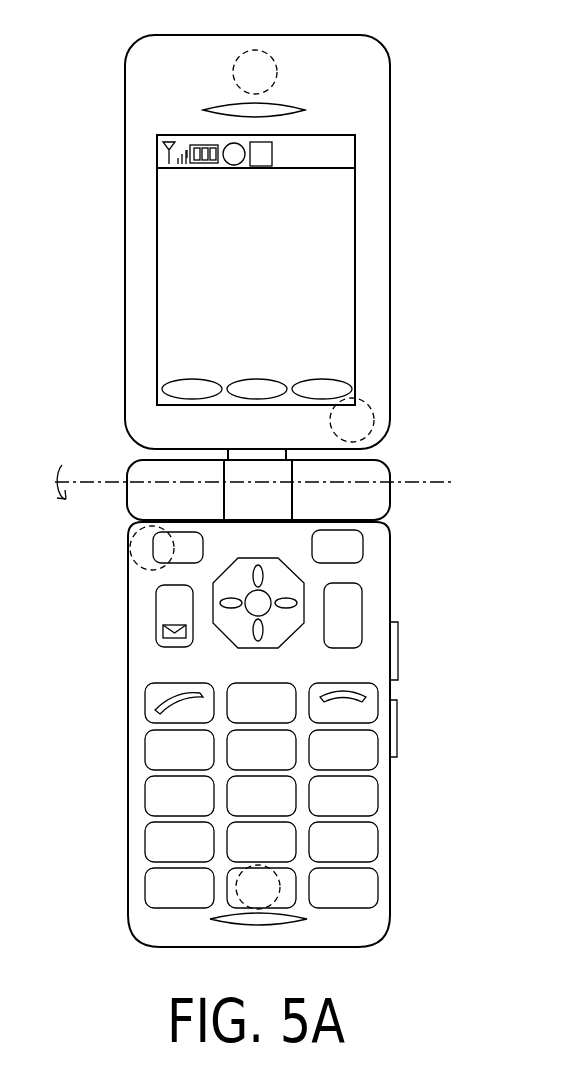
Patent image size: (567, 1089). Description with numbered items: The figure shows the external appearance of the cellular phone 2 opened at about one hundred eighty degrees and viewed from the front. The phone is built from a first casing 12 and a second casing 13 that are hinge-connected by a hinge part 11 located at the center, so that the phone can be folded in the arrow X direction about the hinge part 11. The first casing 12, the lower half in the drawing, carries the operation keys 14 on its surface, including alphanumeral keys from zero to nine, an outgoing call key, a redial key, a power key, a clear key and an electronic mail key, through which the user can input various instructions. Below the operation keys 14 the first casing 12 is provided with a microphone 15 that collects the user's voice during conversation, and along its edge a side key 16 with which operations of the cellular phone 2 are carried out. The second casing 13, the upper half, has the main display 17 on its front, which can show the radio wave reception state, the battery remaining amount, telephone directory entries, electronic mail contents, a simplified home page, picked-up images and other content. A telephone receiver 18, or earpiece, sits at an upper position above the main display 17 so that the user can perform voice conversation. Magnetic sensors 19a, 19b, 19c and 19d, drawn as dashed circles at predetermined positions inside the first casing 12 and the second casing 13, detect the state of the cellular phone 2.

The cellular phone 2 is at (256, 508).
The hinge part 11 is at (390, 465).
The first casing 12 is at (390, 553).
The second casing 13 is at (370, 225).
The operation keys 14 is at (115, 543).
The microphone 15 is at (307, 919).
The side key 16 is at (398, 643).
The main display 17 is at (343, 185).
The telephone receiver 18 is at (305, 110).
The magnetic sensor 19a is at (277, 70).
The magnetic sensor 19b is at (280, 882).
The magnetic sensor 19c is at (374, 420).
The magnetic sensor 19d is at (130, 530).